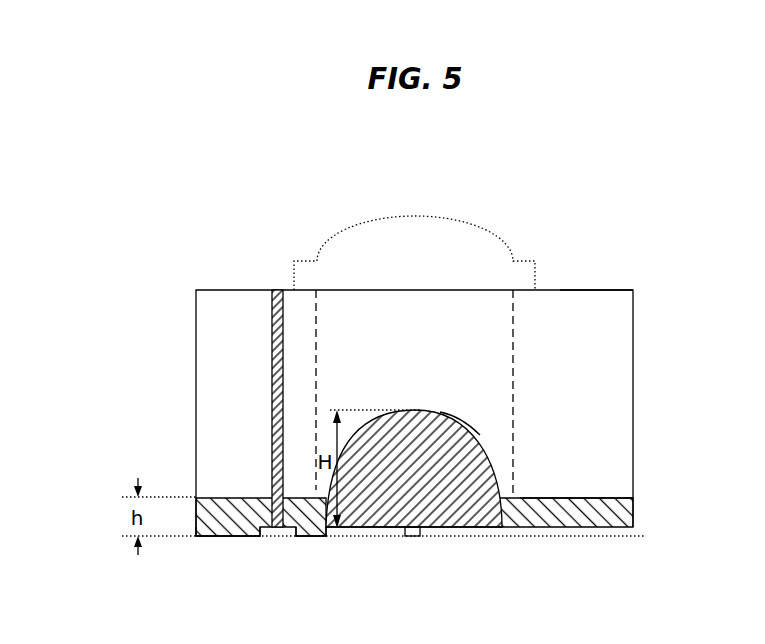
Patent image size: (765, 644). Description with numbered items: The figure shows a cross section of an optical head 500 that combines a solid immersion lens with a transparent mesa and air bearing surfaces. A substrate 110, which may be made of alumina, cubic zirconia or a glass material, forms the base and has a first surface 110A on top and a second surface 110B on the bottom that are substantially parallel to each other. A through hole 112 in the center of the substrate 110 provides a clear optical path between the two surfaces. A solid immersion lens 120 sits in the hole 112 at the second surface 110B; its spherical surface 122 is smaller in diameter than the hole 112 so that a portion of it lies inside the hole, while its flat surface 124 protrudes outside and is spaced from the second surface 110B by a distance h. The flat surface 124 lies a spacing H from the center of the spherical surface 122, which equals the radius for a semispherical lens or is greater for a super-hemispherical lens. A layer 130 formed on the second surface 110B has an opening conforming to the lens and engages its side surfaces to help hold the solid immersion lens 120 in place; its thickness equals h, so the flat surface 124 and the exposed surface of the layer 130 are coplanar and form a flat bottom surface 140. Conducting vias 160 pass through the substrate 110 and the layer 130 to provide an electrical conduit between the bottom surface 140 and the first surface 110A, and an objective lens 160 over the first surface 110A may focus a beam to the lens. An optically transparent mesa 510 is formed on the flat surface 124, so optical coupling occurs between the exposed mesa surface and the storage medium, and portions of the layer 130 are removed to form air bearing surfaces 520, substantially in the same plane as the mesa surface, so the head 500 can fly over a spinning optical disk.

The optical head 500 is at (118, 277).
The substrate 110 is at (565, 344).
The first surface 110A is at (584, 290).
The second surface 110B is at (600, 498).
The through hole 112 is at (365, 325).
The solid immersion lens 120 is at (398, 478).
The spherical surface 122 is at (463, 427).
The flat surface 124 is at (369, 528).
The layer 130 is at (633, 510).
The flat bottom surface 140 is at (543, 550).
The conducting vias 160 is at (271, 372).
The mesa structure 510 is at (413, 536).
The air bearing surfaces 520 is at (233, 537).